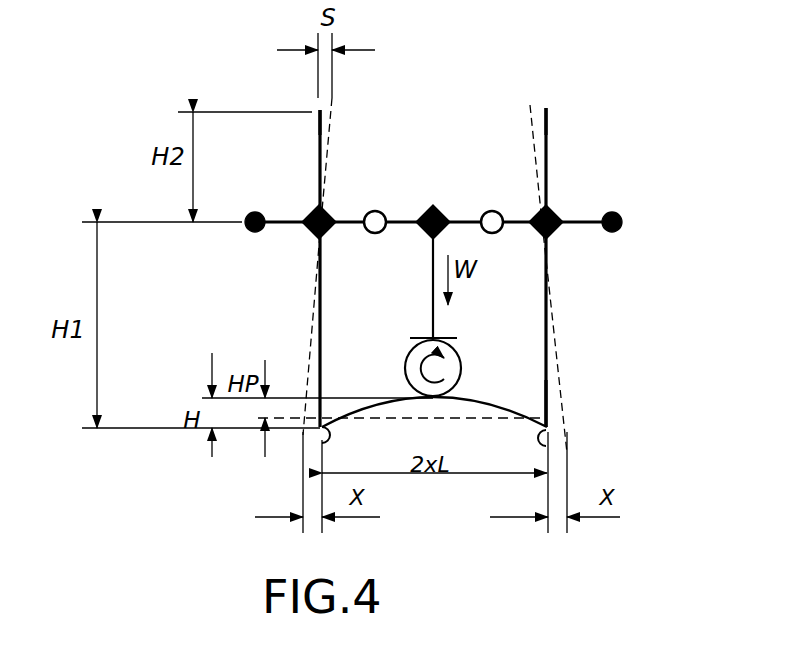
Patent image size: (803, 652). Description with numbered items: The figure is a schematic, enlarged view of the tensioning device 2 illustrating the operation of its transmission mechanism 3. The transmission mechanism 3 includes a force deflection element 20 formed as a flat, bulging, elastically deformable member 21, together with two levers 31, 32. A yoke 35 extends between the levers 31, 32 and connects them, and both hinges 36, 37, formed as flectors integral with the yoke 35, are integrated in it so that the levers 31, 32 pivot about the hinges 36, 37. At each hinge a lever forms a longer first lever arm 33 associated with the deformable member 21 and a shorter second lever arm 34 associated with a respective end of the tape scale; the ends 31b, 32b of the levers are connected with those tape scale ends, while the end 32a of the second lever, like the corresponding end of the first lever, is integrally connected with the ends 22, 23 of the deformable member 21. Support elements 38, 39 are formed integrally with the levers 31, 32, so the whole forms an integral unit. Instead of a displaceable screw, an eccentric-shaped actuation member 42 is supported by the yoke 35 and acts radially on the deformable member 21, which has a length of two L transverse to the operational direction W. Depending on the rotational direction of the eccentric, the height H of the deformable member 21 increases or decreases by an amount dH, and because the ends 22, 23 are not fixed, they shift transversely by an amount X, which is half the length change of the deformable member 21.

The tensioning device 2 is at (450, 106).
The transmission mechanism 3 is at (417, 267).
The force deflection element 20 is at (399, 432).
The deformable member 21 is at (480, 408).
The end of deformable member 22 is at (330, 427).
The end of deformable member 23 is at (548, 450).
The lever 31 is at (317, 259).
The end of lever 31b is at (318, 110).
The lever 32 is at (549, 272).
The end of lever 32a is at (548, 418).
The end of lever 32b is at (548, 108).
The first lever arm 33 is at (318, 327).
The second lever arm 34 is at (328, 136).
The yoke 35 is at (404, 222).
The hinge 36 is at (378, 214).
The hinge 37 is at (493, 212).
The support element 38 is at (258, 212).
The support element 39 is at (616, 212).
The actuation member 42 is at (455, 365).